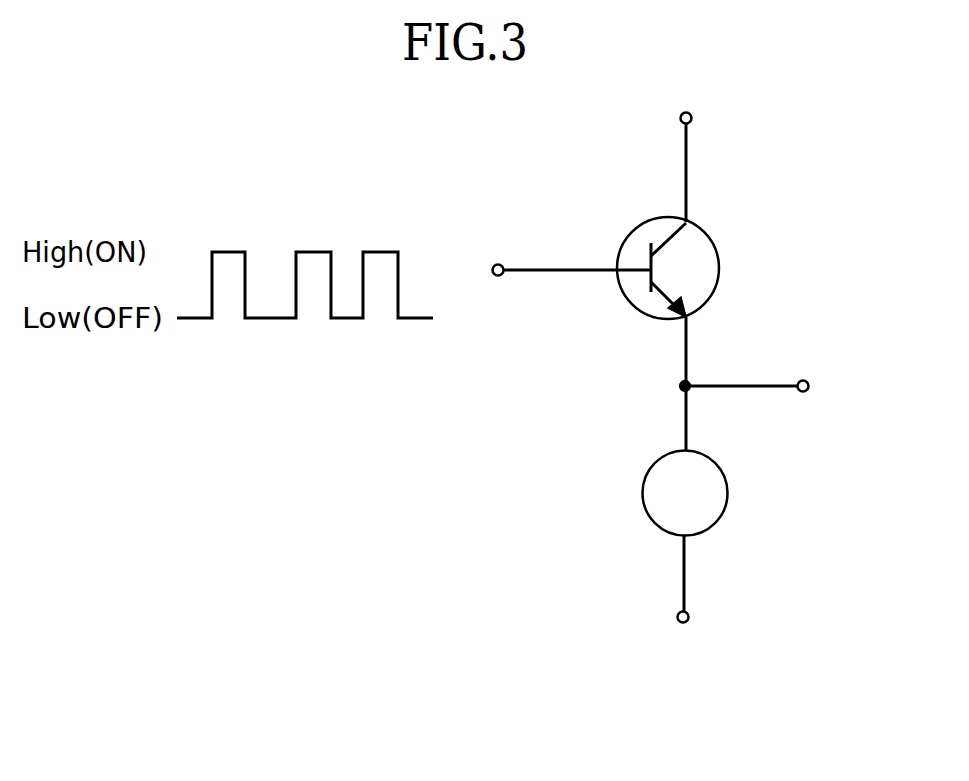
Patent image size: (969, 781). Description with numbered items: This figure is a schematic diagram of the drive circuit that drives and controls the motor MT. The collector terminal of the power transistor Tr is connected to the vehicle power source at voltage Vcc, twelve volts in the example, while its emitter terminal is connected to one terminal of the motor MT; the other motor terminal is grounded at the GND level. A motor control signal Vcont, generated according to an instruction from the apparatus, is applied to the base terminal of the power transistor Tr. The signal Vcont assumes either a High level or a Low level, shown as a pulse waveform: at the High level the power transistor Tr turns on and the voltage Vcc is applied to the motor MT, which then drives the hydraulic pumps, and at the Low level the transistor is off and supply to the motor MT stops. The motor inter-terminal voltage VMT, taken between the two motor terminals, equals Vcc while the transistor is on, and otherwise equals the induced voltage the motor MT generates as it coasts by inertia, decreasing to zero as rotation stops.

The power source voltage Vcc is at (686, 149).
The motor control signal Vcont is at (572, 256).
The power transistor Tr is at (700, 232).
The motor inter-terminal voltage VMT is at (783, 388).
The motor MT is at (727, 492).
The ground level GND is at (684, 602).